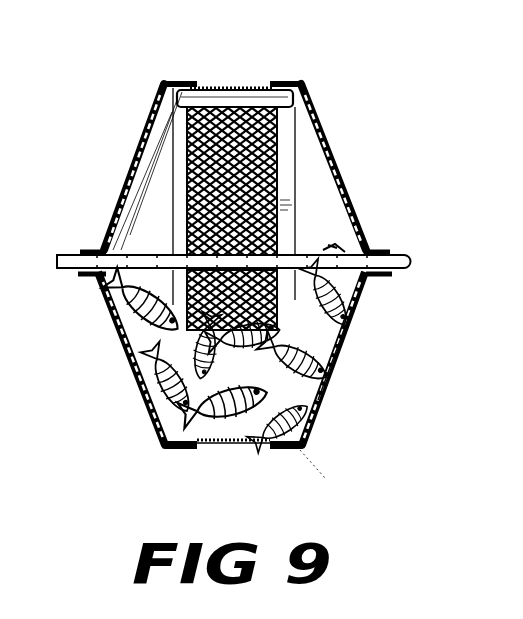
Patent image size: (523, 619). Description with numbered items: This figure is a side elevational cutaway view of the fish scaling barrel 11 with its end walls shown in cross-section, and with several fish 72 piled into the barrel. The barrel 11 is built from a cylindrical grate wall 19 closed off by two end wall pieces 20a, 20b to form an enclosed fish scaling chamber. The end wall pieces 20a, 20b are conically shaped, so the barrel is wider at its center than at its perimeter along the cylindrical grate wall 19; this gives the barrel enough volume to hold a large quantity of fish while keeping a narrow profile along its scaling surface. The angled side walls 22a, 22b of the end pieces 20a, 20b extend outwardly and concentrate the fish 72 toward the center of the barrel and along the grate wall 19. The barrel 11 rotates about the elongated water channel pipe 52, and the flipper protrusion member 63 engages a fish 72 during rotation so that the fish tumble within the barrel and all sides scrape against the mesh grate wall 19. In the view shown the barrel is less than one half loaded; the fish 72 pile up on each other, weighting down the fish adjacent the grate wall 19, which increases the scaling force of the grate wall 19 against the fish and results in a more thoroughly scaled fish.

The fish scaling barrel 11 is at (241, 251).
The flipper protrusion member 63 is at (312, 103).
The end wall piece 20a is at (343, 190).
The end wall piece 20b is at (127, 190).
The elongated water channel pipe 52 is at (410, 258).
The conically shaped cap 22a is at (348, 330).
The conically shaped cap 22b is at (112, 320).
The fish 72 is at (327, 385).
The cylindrical grate wall 19 is at (239, 448).